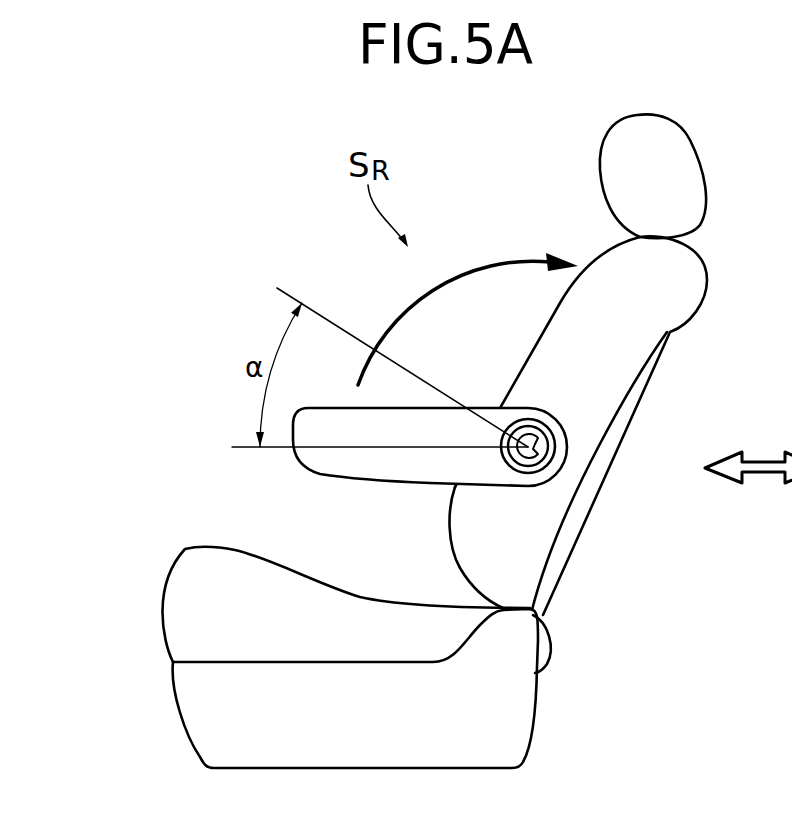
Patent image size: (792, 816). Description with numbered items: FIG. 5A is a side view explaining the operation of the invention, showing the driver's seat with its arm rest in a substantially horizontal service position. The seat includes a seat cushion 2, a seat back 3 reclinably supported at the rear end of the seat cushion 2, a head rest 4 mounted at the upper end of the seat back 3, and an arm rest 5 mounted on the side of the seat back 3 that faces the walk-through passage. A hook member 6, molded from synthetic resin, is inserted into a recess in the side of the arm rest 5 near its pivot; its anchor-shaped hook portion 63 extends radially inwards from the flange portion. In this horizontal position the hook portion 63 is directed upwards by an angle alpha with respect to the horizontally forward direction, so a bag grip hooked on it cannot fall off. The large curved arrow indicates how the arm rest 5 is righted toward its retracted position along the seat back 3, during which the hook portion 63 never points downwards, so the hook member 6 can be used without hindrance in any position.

The seat cushion 2 is at (208, 560).
The seat back 3 is at (622, 350).
The head rest 4 is at (668, 170).
The arm rest 5 is at (383, 473).
The hook member 6 is at (551, 409).
The hook portion 63 is at (516, 472).